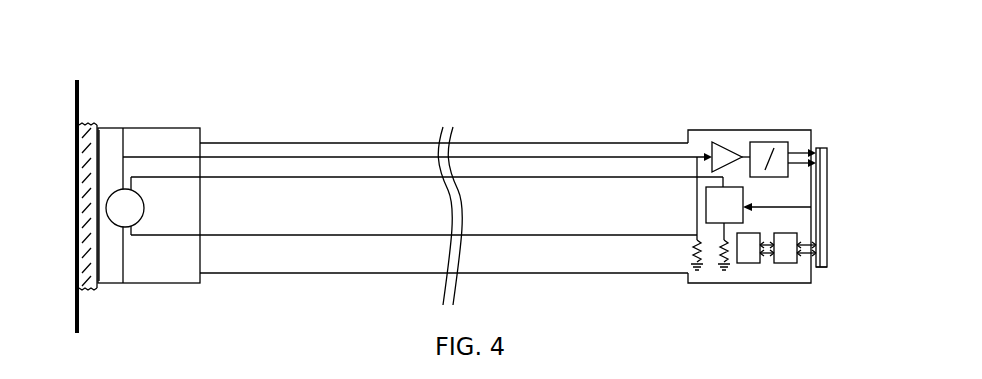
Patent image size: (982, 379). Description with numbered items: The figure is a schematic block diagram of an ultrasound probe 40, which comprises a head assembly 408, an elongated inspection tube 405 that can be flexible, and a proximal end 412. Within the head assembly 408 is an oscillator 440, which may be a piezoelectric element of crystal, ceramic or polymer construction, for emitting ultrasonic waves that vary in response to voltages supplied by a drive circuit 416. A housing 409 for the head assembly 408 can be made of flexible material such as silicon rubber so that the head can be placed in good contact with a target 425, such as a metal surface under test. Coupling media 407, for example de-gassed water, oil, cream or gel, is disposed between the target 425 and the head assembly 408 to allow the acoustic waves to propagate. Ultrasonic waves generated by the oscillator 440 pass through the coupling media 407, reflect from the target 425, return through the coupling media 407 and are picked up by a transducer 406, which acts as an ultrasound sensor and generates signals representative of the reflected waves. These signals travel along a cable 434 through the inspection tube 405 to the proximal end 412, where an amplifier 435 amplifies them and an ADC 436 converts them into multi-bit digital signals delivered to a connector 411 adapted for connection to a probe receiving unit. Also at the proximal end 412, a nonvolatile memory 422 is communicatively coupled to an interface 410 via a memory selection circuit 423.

The ultrasound probe 40 is at (648, 120).
The elongated inspection tube 405 is at (583, 273).
The transducer 406 is at (102, 140).
The coupling media 407 is at (80, 213).
The head assembly 408 is at (195, 118).
The housing 409 is at (158, 127).
The interface 410 is at (821, 143).
The connector 411 is at (823, 268).
The proximal end 412 is at (714, 290).
The drive circuit 416 is at (758, 200).
The nonvolatile memory 422 is at (750, 263).
The memory selection circuit 423 is at (786, 263).
The target 425 is at (80, 102).
The cable 434 is at (380, 153).
The amplifier 435 is at (728, 137).
The ADC 436 is at (773, 142).
The oscillator 440 is at (125, 206).